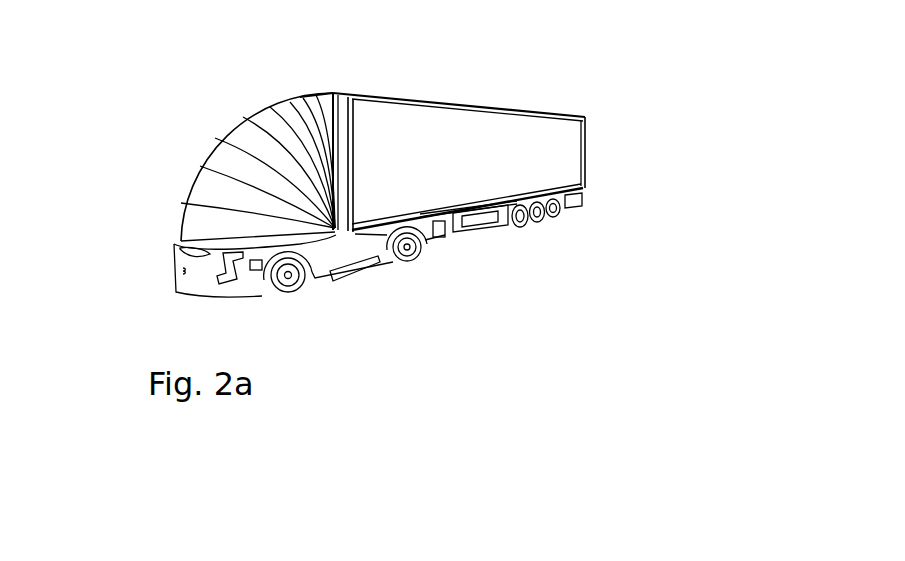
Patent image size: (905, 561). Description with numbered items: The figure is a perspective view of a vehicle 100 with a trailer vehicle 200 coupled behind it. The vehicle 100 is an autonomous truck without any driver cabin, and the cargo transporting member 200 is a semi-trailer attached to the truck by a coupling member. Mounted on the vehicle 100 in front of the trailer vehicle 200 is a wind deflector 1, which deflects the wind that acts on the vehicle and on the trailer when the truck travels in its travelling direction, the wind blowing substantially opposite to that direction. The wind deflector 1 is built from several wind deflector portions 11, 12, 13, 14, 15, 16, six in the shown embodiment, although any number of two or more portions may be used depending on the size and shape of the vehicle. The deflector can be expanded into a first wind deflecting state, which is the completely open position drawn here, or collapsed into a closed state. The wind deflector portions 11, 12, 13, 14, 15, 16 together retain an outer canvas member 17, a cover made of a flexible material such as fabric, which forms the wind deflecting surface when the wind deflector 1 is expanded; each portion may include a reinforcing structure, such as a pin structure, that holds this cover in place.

The wind deflector 1 is at (152, 245).
The vehicle 100 is at (347, 293).
The cargo transporting member 200 is at (497, 247).
The wind deflector portion 11 is at (181, 220).
The wind deflector portion 12 is at (192, 181).
The wind deflector portion 13 is at (208, 149).
The wind deflector portion 14 is at (242, 132).
The wind deflector portion 15 is at (277, 111).
The wind deflector portion 16 is at (310, 112).
The canvas member 17 is at (292, 118).